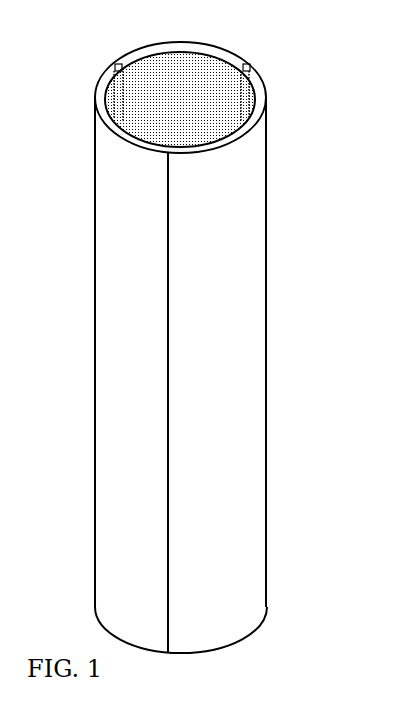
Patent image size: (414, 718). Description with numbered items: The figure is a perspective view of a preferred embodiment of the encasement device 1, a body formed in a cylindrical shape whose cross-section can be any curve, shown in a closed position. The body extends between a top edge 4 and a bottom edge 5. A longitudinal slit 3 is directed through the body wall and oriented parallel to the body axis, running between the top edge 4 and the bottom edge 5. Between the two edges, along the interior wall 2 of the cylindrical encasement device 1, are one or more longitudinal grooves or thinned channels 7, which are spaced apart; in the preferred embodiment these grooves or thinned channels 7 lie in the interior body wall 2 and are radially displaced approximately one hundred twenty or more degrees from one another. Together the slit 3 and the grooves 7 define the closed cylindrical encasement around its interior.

The encasement device 1 is at (226, 341).
The interior wall 2 is at (189, 110).
The longitudinal slit 3 is at (168, 422).
The top edge 4 is at (245, 127).
The bottom edge 5 is at (257, 625).
The longitudinal grooves or thinned channels 7 is at (118, 66).